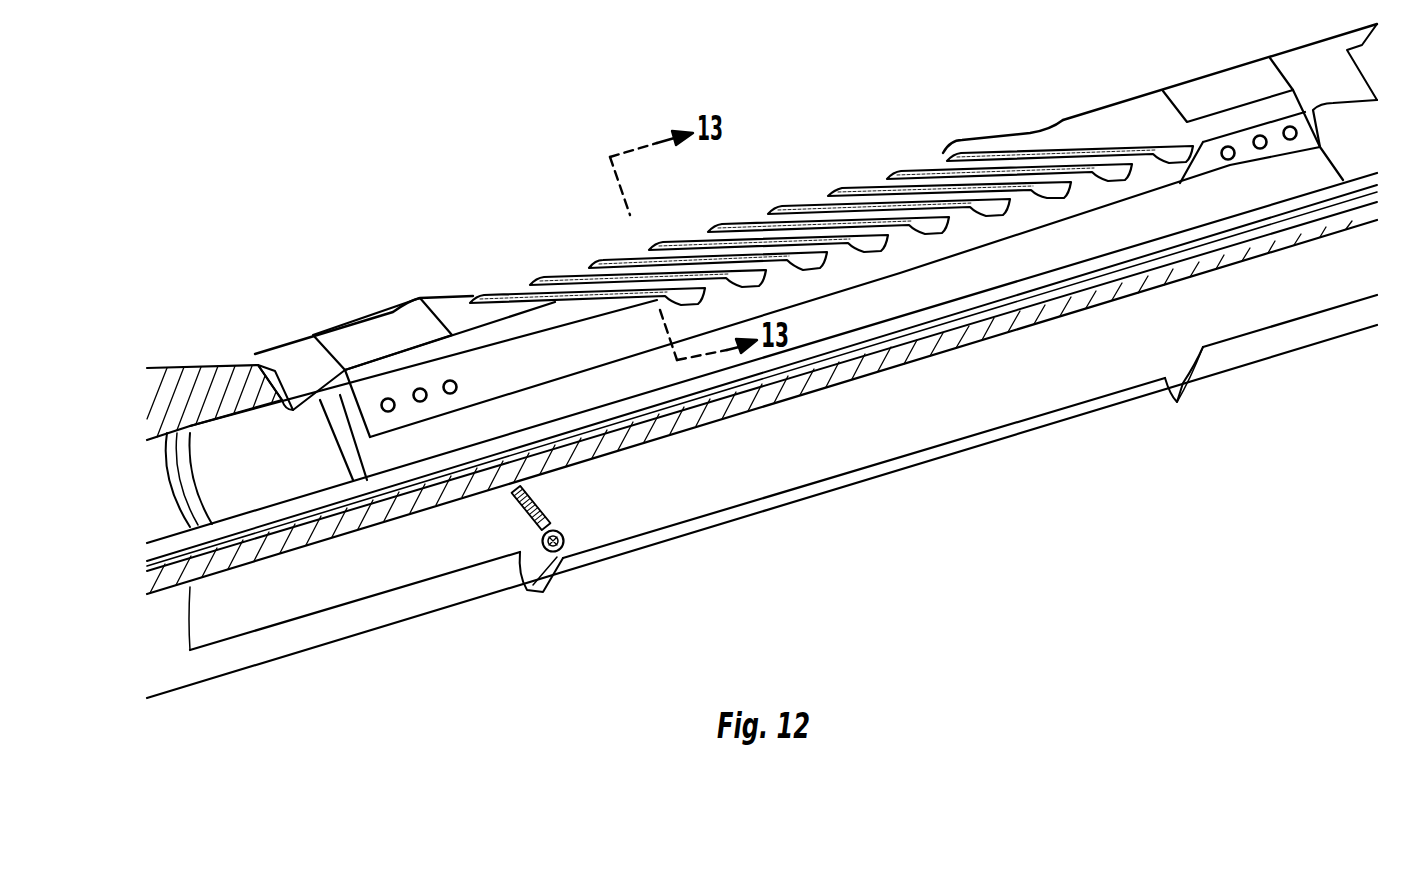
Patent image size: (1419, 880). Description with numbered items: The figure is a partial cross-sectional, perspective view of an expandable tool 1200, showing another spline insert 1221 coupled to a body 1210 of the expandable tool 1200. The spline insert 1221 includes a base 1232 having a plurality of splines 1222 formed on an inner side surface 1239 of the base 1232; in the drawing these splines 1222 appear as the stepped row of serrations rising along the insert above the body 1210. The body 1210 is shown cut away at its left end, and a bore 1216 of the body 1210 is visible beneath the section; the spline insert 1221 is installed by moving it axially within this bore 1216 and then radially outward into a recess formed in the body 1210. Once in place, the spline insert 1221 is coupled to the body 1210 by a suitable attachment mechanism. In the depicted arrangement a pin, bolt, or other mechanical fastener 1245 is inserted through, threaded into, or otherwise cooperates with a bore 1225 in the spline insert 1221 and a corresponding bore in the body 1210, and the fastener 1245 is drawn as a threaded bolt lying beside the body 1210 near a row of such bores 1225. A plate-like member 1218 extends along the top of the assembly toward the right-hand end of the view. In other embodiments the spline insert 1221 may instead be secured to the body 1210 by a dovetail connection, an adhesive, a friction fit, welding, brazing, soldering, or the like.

The expandable tool 1200 is at (306, 162).
The body 1210 is at (222, 402).
The bore 1216 is at (284, 462).
The top plate 1218 is at (1212, 70).
The spline insert 1221 is at (750, 190).
The splines 1222 is at (818, 212).
The bore 1225 is at (457, 389).
The base 1232 is at (1098, 196).
The inner side surface 1239 is at (1100, 120).
The mechanical fastener 1245 is at (566, 548).